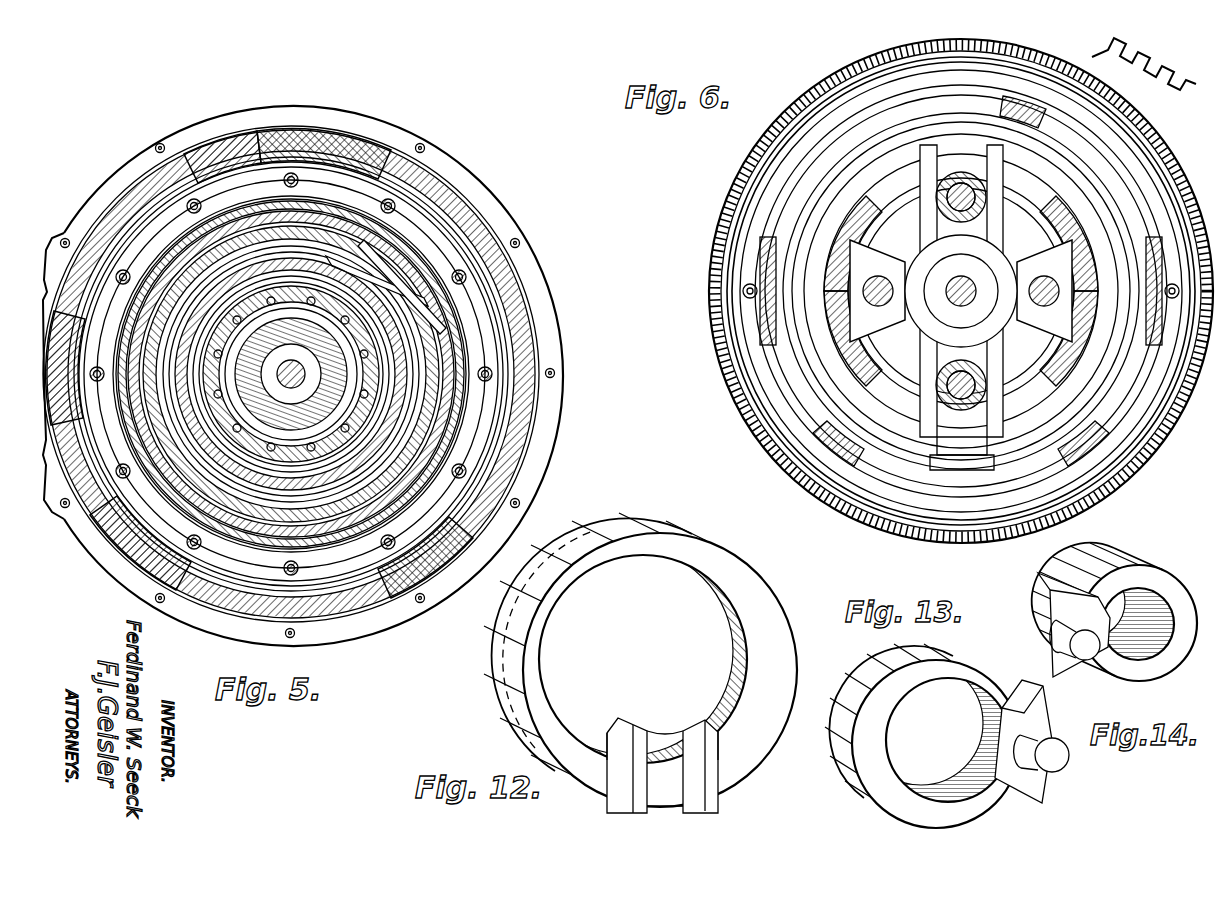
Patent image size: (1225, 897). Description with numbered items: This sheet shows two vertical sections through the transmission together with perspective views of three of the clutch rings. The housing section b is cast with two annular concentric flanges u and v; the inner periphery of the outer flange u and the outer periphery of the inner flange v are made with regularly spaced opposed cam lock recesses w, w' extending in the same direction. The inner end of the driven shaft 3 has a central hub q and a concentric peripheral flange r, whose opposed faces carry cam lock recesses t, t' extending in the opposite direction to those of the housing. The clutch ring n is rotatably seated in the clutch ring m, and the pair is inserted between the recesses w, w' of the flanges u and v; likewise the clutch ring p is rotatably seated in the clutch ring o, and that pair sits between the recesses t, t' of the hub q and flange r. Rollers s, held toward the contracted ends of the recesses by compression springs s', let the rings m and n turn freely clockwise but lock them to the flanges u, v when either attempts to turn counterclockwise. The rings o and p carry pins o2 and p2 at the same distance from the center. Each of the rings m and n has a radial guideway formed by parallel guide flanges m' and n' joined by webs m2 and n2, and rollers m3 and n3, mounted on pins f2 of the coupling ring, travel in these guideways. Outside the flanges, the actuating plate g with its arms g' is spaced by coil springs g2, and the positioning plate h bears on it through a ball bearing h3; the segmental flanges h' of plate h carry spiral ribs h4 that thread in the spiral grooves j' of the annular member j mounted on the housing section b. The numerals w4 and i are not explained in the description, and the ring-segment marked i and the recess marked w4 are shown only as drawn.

In FIG. 5, the annular member j is at (303, 383).
In FIG. 5, the spiral grooves j' is at (291, 360).
In FIG. 5, the housing section b is at (392, 136).
In FIG. 6, the housing section b is at (1176, 138).
In FIG. 6, the positioning plate h is at (961, 291).
In FIG. 5, the segmental flanges h' is at (285, 339).
In FIG. 6, the segmental flanges h' is at (961, 291).
In FIG. 6, the ball bearing h3 is at (1166, 84).
In FIG. 5, the spiral ribs h4 is at (214, 150).
In FIG. 5, the rollers s is at (291, 373).
In FIG. 5, the compression springs s' is at (276, 359).
In FIG. 5, the cam lock recesses w is at (291, 366).
In FIG. 5, the cam lock recesses w' is at (295, 368).
In FIG. 5, the spring seat w4 is at (236, 246).
In FIG. 5, the ring i is at (352, 240).
In FIG. 5, the clutch ring m is at (386, 271).
In FIG. 6, the clutch ring m is at (961, 289).
In FIG. 6, the guide flanges m' is at (961, 288).
In FIG. 6, the web m2 is at (990, 150).
In FIG. 6, the roller m3 is at (961, 184).
In FIG. 5, the inner flange v is at (260, 282).
In FIG. 5, the clutch ring n is at (331, 374).
In FIG. 6, the clutch ring n is at (961, 291).
In FIG. 12, the clutch ring n is at (640, 660).
In FIG. 6, the guide flanges n' is at (958, 442).
In FIG. 12, the guide flanges n' is at (662, 777).
In FIG. 6, the web n2 is at (962, 468).
In FIG. 12, the web n2 is at (662, 740).
In FIG. 6, the roller n3 is at (960, 360).
In FIG. 5, the cam lock recesses t is at (296, 383).
In FIG. 5, the cam lock recesses t' is at (331, 374).
In FIG. 5, the outer flange u is at (130, 396).
In FIG. 6, the outer flange u is at (1050, 150).
In FIG. 5, the peripheral flange r is at (300, 330).
In FIG. 5, the central hub q is at (291, 374).
In FIG. 5, the clutch ring p is at (318, 370).
In FIG. 14, the clutch ring p is at (1150, 578).
In FIG. 6, the pin p2 is at (892, 291).
In FIG. 14, the pin p2 is at (1083, 660).
In FIG. 13, the clutch ring o is at (858, 672).
In FIG. 6, the pin o2 is at (1044, 304).
In FIG. 13, the pin o2 is at (1058, 768).
In FIG. 6, the actuating plate g is at (961, 291).
In FIG. 6, the arms g' is at (961, 259).
In FIG. 6, the coil springs g2 is at (743, 291).
In FIG. 6, the pins f2 is at (1012, 394).
In FIG. 6, the driven shaft 3 is at (964, 280).